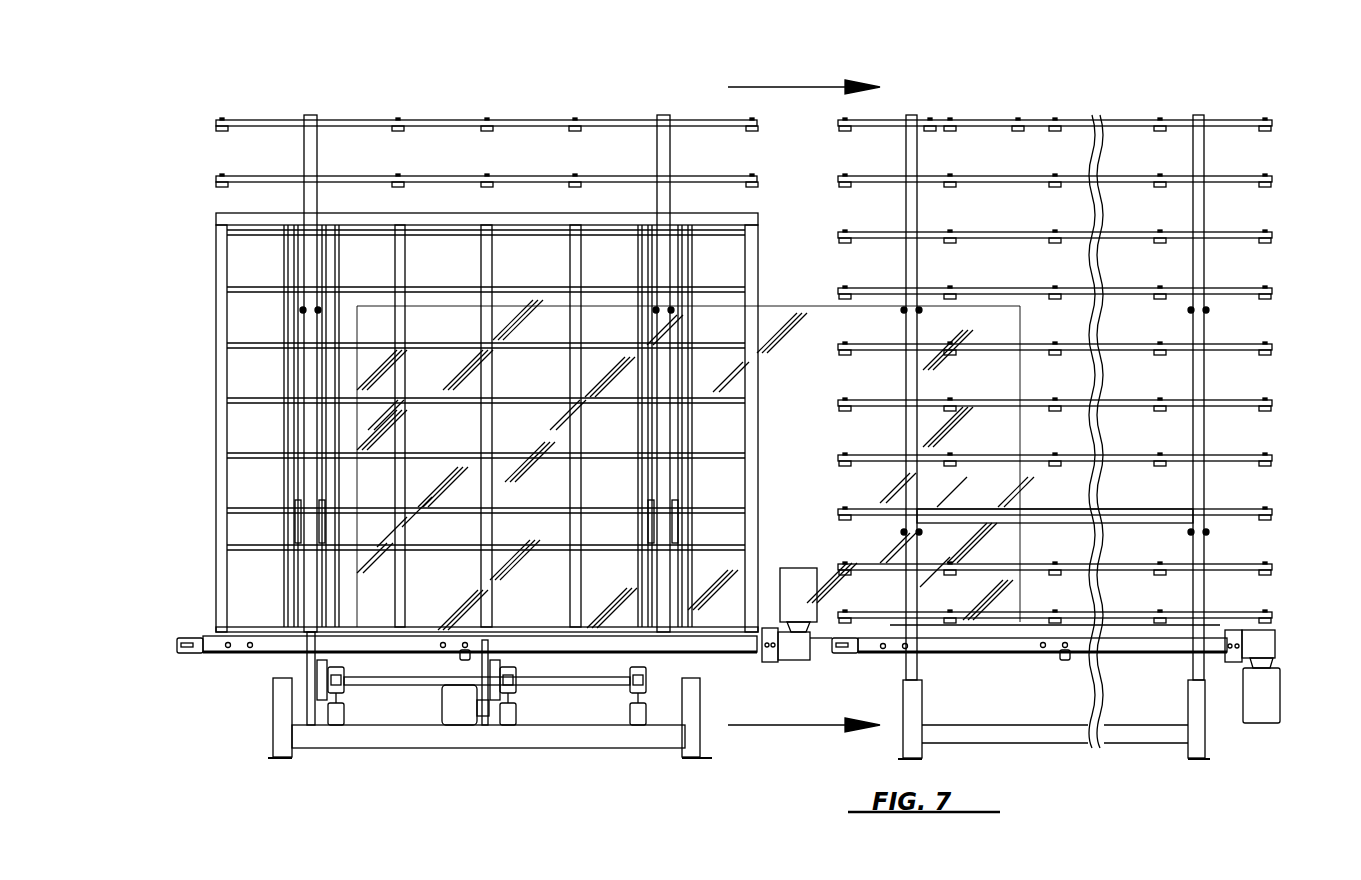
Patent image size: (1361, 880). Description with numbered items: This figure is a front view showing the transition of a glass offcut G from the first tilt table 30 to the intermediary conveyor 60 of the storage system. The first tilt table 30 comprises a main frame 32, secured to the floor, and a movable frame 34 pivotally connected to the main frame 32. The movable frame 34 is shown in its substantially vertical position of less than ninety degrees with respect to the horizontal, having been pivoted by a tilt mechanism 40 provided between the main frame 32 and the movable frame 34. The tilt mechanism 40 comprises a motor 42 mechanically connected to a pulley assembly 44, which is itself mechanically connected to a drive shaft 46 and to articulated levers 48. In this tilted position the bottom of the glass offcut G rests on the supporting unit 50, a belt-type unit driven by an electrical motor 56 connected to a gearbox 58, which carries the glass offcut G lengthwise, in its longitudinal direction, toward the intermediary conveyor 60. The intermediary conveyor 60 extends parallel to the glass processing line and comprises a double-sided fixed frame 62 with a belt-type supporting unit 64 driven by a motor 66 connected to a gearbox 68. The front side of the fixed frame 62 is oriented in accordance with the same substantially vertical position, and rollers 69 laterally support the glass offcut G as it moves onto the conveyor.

The first tilt table 30 is at (258, 100).
The main frame 32 is at (315, 740).
The movable frame 34 is at (222, 368).
The tilt mechanism 40 is at (600, 708).
The motor 42 is at (457, 707).
The pulley assembly 44 is at (484, 722).
The drive shaft 46 is at (540, 684).
The articulated levers 48 is at (310, 612).
The supporting unit 50 is at (205, 662).
The electrical motor 56 is at (803, 597).
The gearbox 58 is at (793, 652).
The intermediary conveyor 60 is at (1010, 100).
The double-sided fixed frame 62 is at (1198, 122).
The belt-type supporting unit 64 is at (1115, 672).
The motor 66 is at (1268, 695).
The gearbox 68 is at (1260, 645).
The rollers 69 is at (1270, 350).
The glass offcut G is at (710, 592).